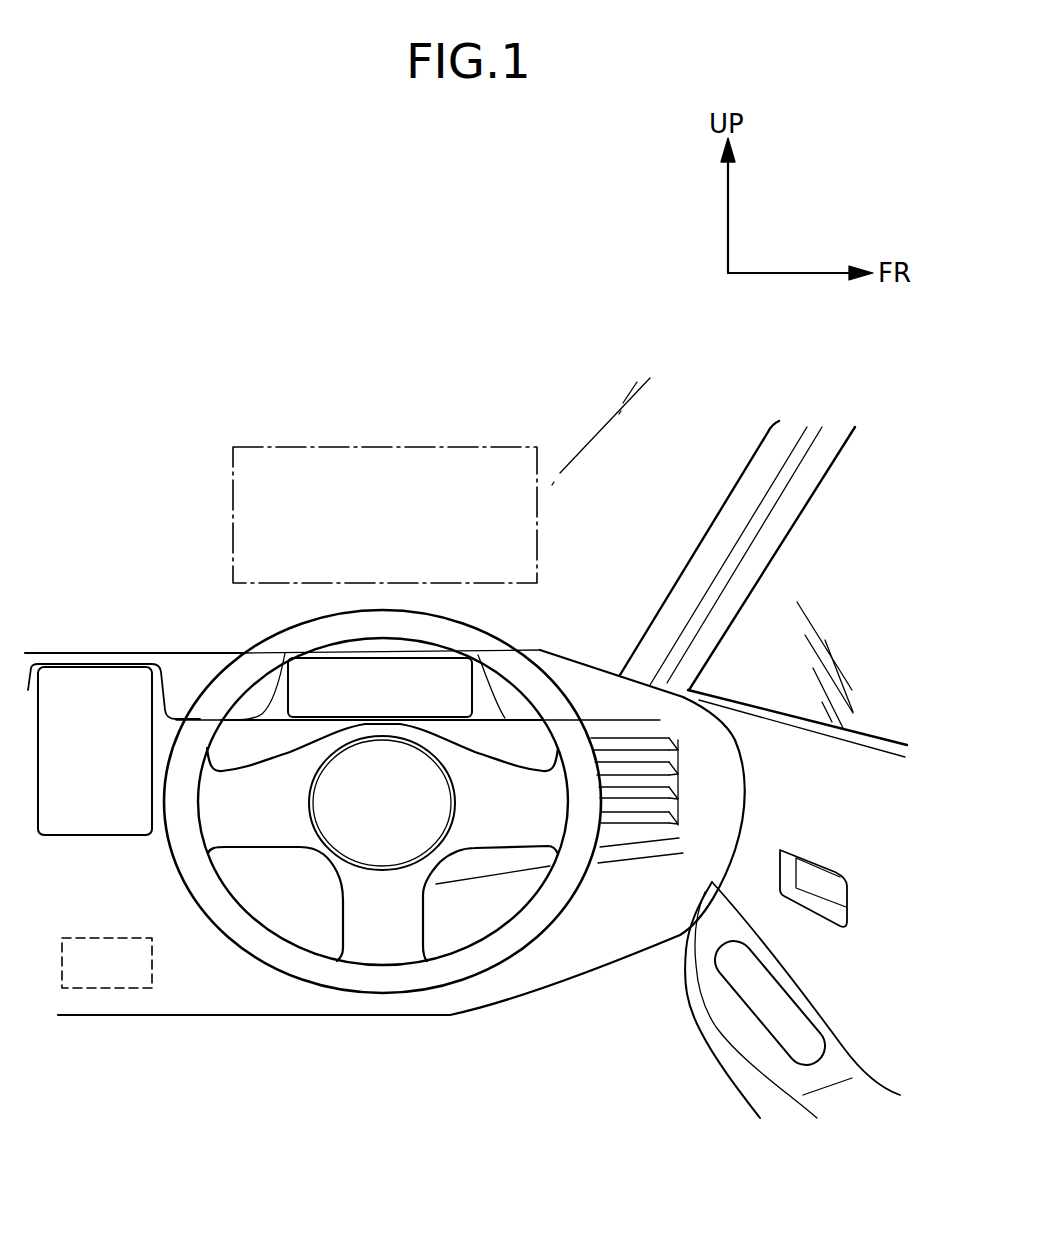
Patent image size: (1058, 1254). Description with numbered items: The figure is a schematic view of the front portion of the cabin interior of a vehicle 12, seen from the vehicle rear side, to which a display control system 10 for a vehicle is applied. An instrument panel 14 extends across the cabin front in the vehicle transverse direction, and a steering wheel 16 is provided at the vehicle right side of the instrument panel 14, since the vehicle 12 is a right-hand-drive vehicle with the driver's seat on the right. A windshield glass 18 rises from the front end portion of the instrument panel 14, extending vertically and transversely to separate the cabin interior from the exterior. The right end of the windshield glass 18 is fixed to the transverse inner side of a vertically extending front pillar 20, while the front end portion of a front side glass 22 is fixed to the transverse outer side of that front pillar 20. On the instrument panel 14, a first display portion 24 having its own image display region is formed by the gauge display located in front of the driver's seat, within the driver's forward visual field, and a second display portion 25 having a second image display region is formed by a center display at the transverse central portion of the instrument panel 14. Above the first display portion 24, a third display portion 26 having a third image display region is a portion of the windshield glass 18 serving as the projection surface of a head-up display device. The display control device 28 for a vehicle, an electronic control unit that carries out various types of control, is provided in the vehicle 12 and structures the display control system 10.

The display control system for a vehicle 10 is at (378, 416).
The vehicle 12 is at (420, 320).
The instrument panel 14 is at (593, 955).
The steering wheel 16 is at (570, 697).
The windshield glass 18 is at (662, 528).
The front pillar 20 is at (753, 462).
The front side glass 22 is at (883, 688).
The first display portion 24 is at (330, 692).
The second display portion 25 is at (88, 815).
The third display portion 26 is at (435, 447).
The display control device for a vehicle 28 is at (103, 990).